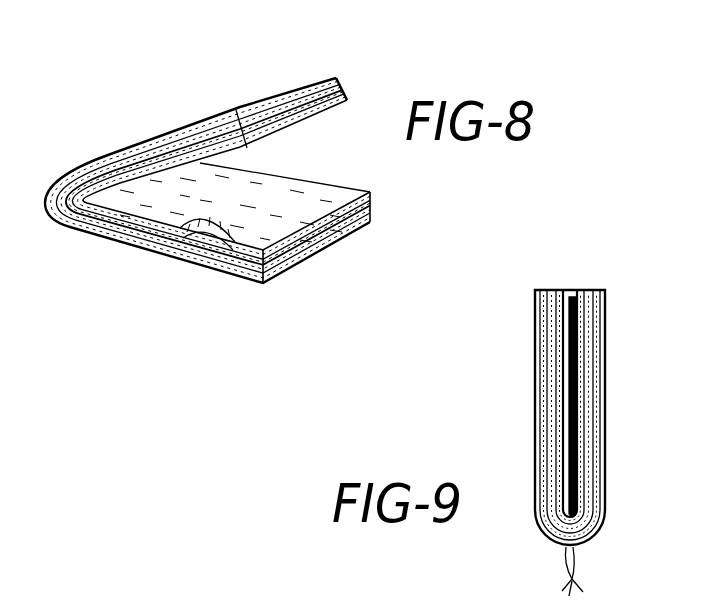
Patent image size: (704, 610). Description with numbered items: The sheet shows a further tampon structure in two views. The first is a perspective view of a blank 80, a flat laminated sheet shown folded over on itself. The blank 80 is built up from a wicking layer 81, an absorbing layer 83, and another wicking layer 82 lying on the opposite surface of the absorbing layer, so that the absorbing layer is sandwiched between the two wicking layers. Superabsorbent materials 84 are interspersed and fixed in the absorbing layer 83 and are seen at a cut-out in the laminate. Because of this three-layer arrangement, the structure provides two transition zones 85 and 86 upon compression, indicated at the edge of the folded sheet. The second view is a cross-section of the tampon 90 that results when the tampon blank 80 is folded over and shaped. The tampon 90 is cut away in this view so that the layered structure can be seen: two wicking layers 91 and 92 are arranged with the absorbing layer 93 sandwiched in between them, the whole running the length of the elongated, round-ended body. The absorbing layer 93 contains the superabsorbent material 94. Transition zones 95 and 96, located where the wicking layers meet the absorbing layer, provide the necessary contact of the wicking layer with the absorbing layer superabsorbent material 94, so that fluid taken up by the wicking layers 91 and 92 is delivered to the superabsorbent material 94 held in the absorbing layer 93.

In FIG. 8, the blank 80 is at (97, 138).
In FIG. 8, the wicking layer 81 is at (365, 226).
In FIG. 8, the wicking layer 82 is at (371, 192).
In FIG. 8, the absorbing layer 83 is at (373, 200).
In FIG. 8, the superabsorbent materials 84 is at (196, 250).
In FIG. 8, the transition zone 85 is at (337, 80).
In FIG. 8, the transition zone 86 is at (344, 88).
In FIG. 9, the tampon 90 is at (527, 365).
In FIG. 9, the wicking layer 91 is at (603, 290).
In FIG. 9, the wicking layer 92 is at (575, 289).
In FIG. 9, the absorbing layer 93 is at (585, 289).
In FIG. 9, the superabsorbent material 94 is at (592, 396).
In FIG. 9, the transition zone 95 is at (548, 434).
In FIG. 9, the transition zone 96 is at (590, 443).